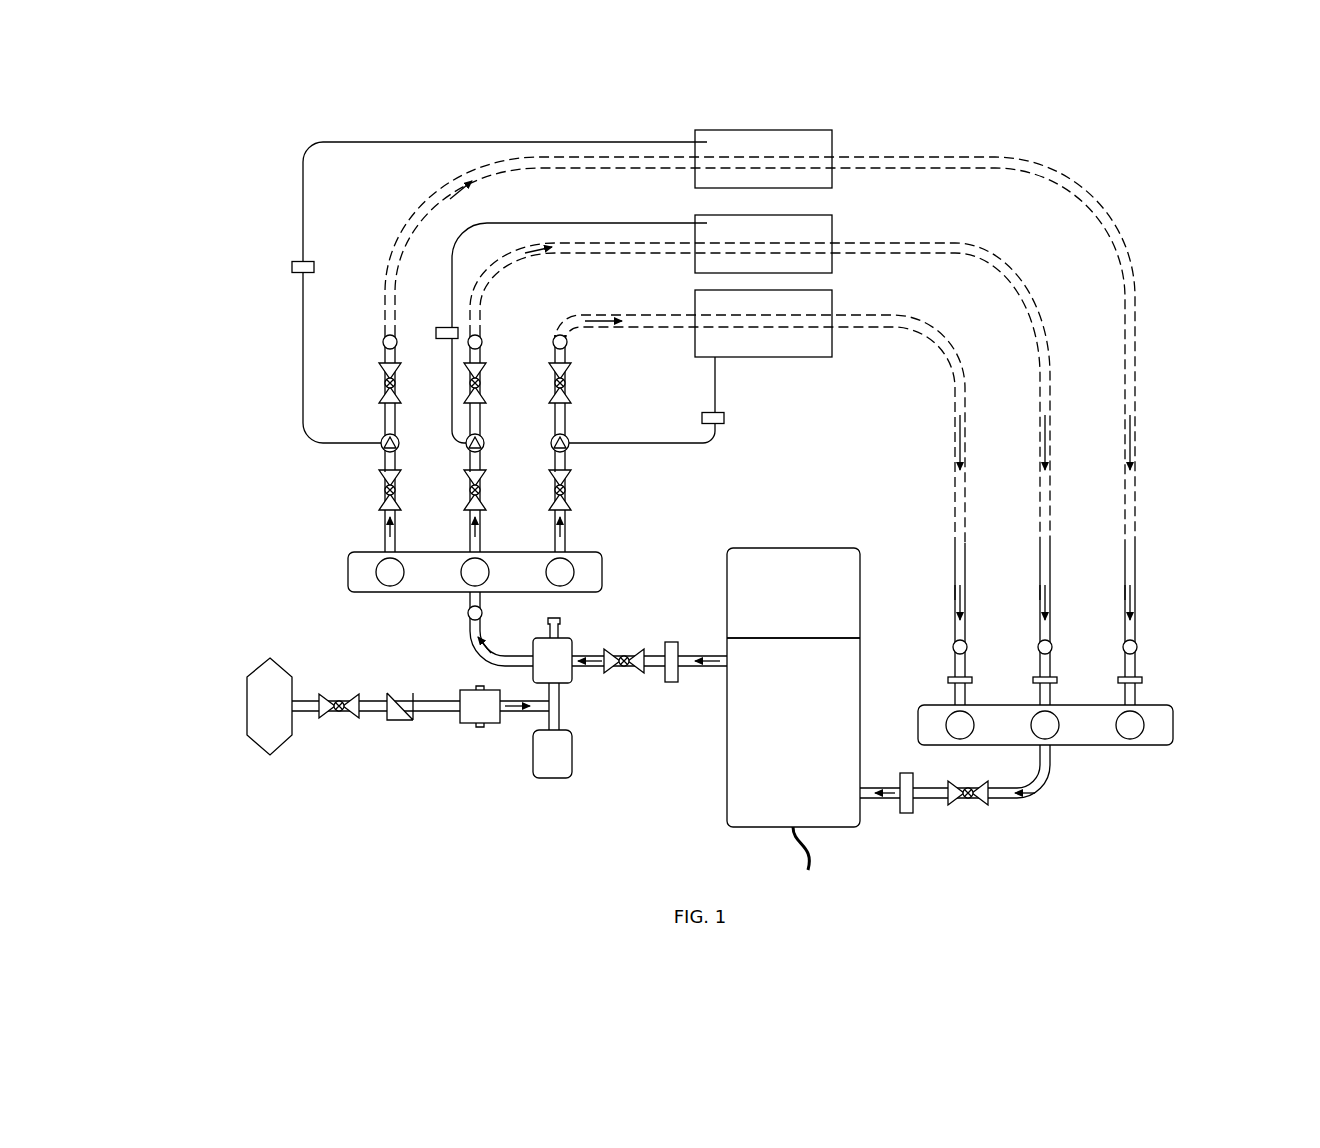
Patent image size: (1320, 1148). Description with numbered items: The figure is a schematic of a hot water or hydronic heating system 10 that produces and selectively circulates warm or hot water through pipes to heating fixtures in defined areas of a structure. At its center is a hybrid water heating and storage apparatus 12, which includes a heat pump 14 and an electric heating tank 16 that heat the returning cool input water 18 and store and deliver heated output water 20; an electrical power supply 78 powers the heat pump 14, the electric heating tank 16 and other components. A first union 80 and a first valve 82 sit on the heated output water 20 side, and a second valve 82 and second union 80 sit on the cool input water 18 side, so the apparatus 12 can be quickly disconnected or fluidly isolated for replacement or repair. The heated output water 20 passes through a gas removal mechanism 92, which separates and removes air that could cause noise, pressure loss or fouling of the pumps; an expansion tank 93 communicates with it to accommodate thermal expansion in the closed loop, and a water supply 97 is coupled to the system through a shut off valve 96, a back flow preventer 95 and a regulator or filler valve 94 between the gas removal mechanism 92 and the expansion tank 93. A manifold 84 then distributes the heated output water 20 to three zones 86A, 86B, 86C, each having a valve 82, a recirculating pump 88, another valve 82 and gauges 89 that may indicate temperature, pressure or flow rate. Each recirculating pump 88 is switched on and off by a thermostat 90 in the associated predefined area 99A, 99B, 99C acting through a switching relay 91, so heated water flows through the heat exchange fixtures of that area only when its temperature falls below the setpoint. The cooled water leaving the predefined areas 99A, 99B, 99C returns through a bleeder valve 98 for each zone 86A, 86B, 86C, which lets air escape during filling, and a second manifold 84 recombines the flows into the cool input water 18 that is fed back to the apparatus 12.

The hot water heating system 10 is at (1091, 158).
The water heating and storage apparatus 12 is at (808, 545).
The heat pump 14 is at (740, 572).
The electric heating tank 16 is at (745, 778).
The cool input water 18 is at (965, 440).
The heated output water 20 is at (432, 205).
The electrical power supply 78 is at (795, 856).
The union 80 is at (672, 683).
The valve 82 is at (379, 386).
The manifold 84 is at (348, 575).
The first zone 86A is at (570, 470).
The second zone 86B is at (470, 470).
The third zone 86C is at (380, 470).
The recirculating pump 88 is at (381, 440).
The gauge 89 is at (383, 340).
The thermostat 90 is at (707, 140).
The switching relay 91 is at (292, 266).
The gas removal mechanism 92 is at (565, 684).
The expansion tank 93 is at (553, 780).
The regulator or filler valve 94 is at (470, 690).
The back flow preventer 95 is at (395, 698).
The shut off valve 96 is at (339, 720).
The water supply 97 is at (245, 706).
The bleeder valve 98 is at (948, 681).
The first predefined area 99A is at (808, 358).
The second predefined area 99B is at (820, 230).
The third predefined area 99C is at (826, 142).